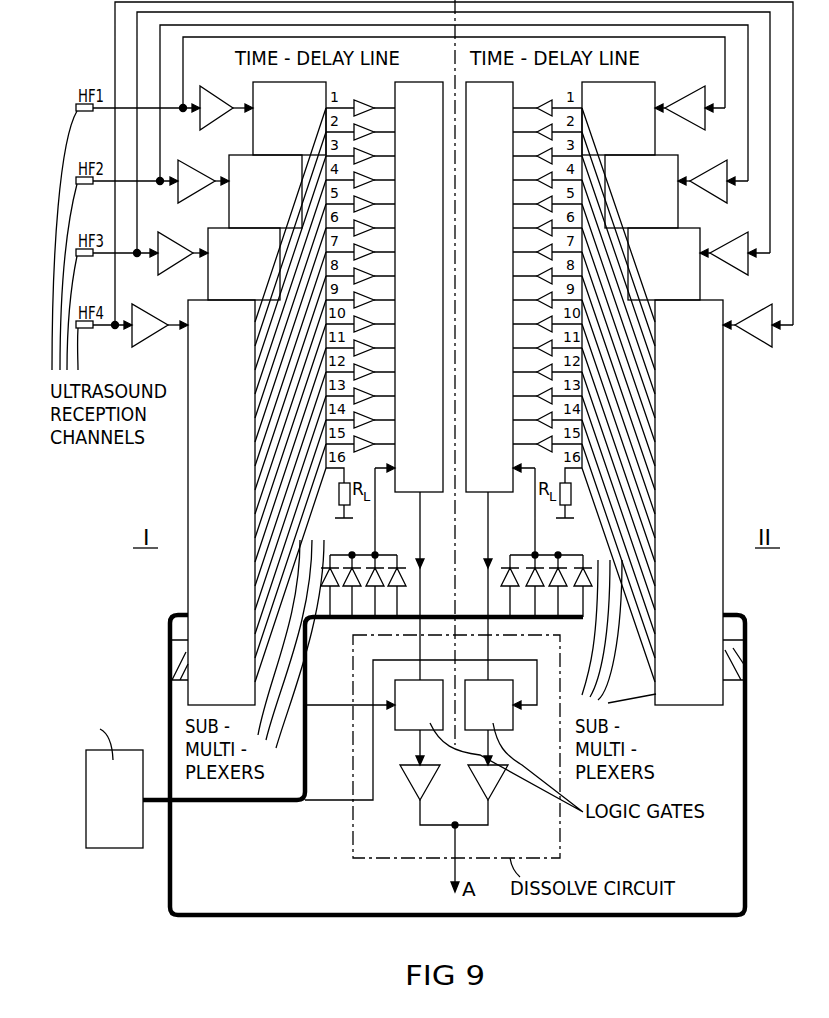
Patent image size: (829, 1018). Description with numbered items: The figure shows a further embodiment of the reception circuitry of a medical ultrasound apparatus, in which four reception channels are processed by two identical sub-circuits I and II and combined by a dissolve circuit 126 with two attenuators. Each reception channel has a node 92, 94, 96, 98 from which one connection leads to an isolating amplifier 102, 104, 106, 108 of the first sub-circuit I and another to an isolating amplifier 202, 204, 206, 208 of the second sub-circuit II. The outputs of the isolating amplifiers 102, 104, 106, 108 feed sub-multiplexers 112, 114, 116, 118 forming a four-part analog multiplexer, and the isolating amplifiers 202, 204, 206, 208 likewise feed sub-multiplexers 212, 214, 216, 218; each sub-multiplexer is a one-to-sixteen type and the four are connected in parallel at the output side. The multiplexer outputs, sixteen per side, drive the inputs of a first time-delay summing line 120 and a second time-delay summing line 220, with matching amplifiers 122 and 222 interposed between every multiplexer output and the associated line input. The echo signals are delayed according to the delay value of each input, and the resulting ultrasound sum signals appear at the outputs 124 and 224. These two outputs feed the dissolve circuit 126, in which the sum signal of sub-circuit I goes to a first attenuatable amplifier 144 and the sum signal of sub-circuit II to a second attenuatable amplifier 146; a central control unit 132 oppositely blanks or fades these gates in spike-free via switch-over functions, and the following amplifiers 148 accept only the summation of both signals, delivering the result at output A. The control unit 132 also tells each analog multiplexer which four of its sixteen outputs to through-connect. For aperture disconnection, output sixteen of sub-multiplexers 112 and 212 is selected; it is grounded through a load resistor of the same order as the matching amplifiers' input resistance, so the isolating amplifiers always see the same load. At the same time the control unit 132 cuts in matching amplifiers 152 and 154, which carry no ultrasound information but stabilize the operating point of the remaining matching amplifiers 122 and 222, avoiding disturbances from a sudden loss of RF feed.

The node 92 is at (184, 106).
The node 94 is at (161, 179).
The node 96 is at (138, 251).
The node 98 is at (116, 323).
The isolating amplifier 102 is at (208, 124).
The isolating amplifier 104 is at (186, 198).
The isolating amplifier 106 is at (166, 270).
The isolating amplifier 108 is at (142, 340).
The sub-multiplexer 112 is at (296, 117).
The sub-multiplexer 114 is at (271, 192).
The sub-multiplexer 116 is at (249, 266).
The sub-multiplexer 118 is at (229, 337).
The first time-delay summing line 120 is at (435, 143).
The matching amplifier 122 is at (370, 117).
The output of first time-delay line 124 is at (423, 492).
The dissolve circuit 126 is at (410, 860).
The central control unit 132 is at (94, 848).
The first attenuatable amplifier 144 is at (410, 735).
The second attenuatable amplifier 146 is at (509, 735).
The following amplifier 148 is at (413, 790).
The matching amplifier 152 is at (405, 555).
The matching amplifier 154 is at (522, 567).
The isolating amplifier 202 is at (702, 126).
The isolating amplifier 204 is at (724, 199).
The isolating amplifier 206 is at (745, 270).
The isolating amplifier 208 is at (769, 342).
The sub-multiplexer 212 is at (641, 117).
The sub-multiplexer 214 is at (664, 192).
The sub-multiplexer 216 is at (686, 266).
The sub-multiplexer 218 is at (716, 337).
The second time-delay summing line 220 is at (504, 143).
The matching amplifier 222 is at (530, 117).
The output of second time-delay line 224 is at (490, 493).